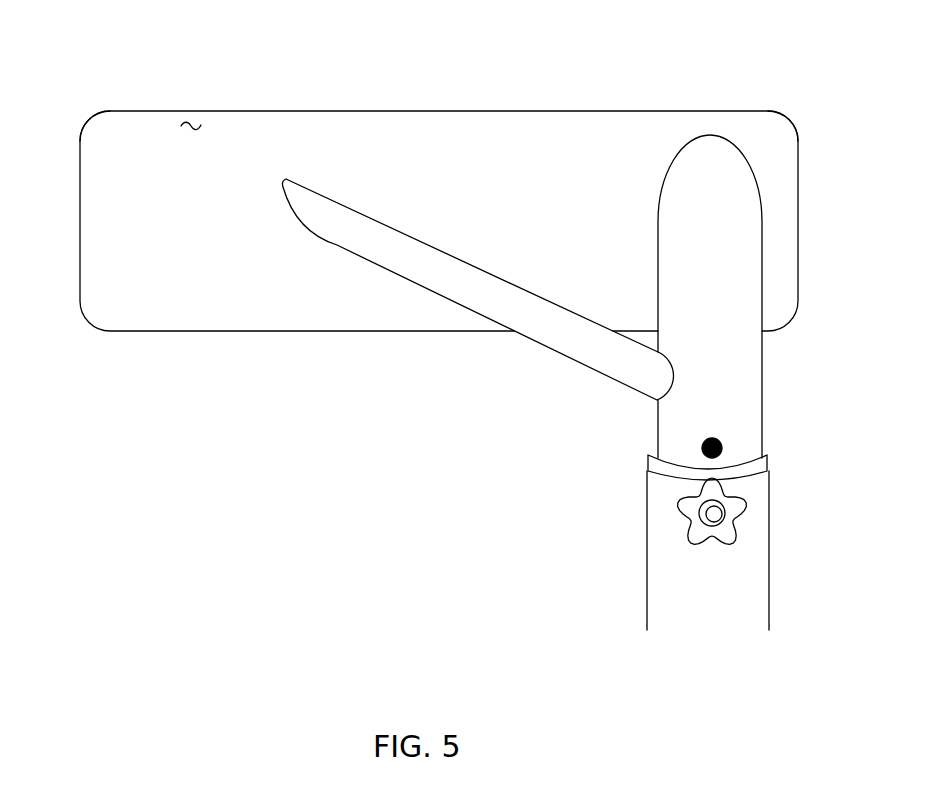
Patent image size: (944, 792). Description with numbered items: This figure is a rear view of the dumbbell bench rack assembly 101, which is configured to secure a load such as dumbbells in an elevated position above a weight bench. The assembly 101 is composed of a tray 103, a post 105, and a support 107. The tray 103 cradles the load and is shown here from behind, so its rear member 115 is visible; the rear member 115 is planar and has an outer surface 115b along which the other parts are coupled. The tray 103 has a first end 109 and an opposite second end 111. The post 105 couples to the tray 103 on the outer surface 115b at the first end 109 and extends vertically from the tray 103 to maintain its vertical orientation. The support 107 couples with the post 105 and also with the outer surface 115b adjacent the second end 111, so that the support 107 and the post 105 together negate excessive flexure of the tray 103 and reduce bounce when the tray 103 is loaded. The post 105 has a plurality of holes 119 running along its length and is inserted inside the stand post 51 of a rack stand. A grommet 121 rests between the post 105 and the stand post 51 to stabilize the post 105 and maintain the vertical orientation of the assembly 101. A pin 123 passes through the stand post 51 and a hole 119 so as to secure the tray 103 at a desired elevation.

The stand post 51 is at (647, 568).
The dumbbell bench rack assembly 101 is at (396, 490).
The tray 103 is at (370, 85).
The post 105 is at (739, 383).
The support 107 is at (535, 305).
The first end 109 is at (817, 142).
The second end 111 is at (60, 165).
The rear member 115 is at (619, 132).
The outer surface 115b is at (192, 124).
The hole 119 is at (722, 441).
The grommet 121 is at (648, 463).
The pin 123 is at (750, 510).